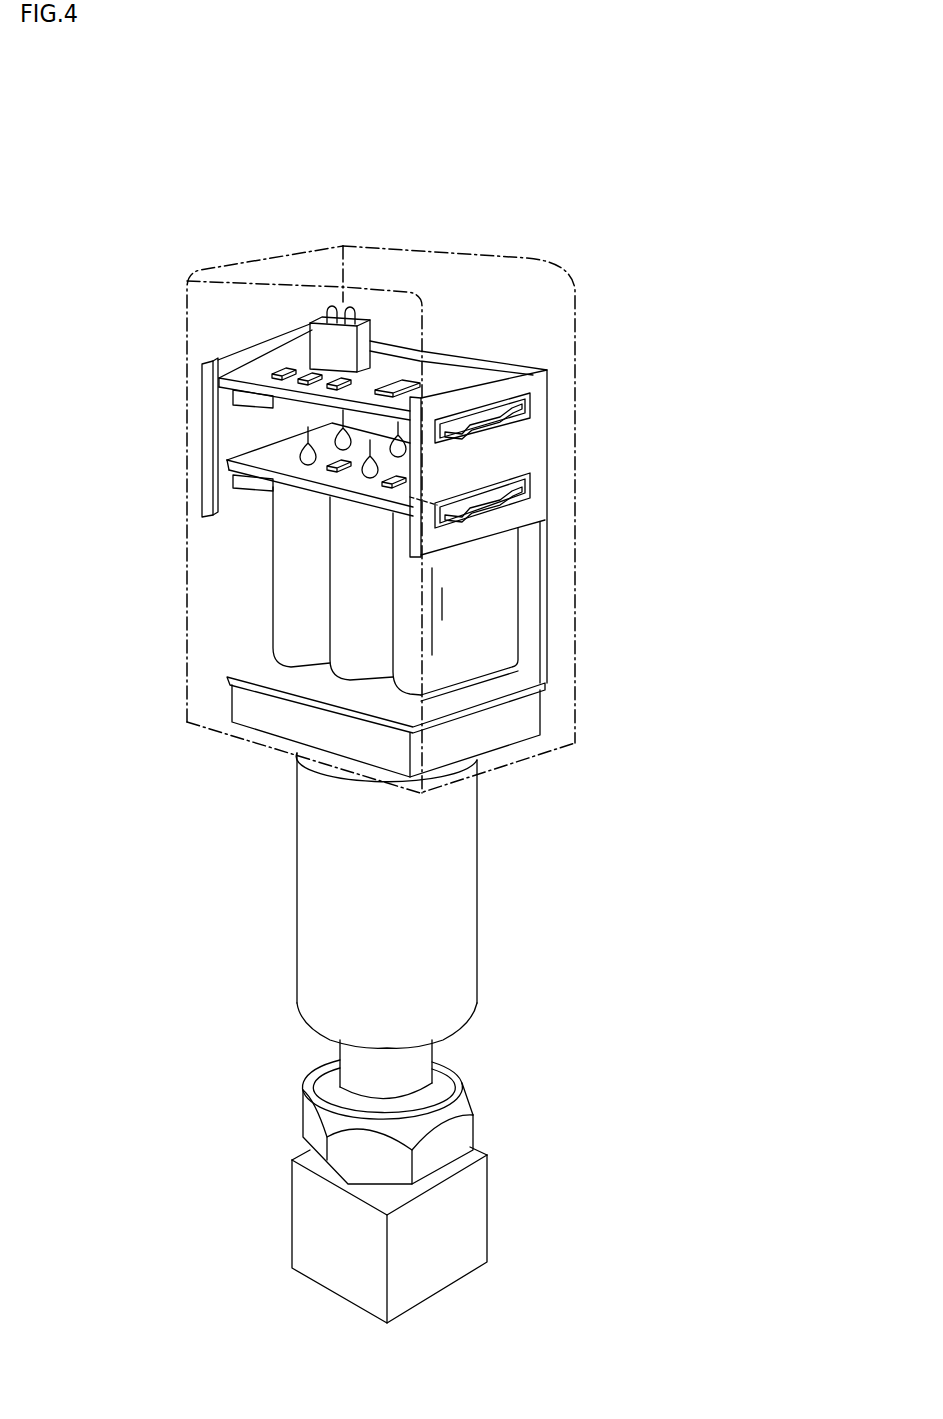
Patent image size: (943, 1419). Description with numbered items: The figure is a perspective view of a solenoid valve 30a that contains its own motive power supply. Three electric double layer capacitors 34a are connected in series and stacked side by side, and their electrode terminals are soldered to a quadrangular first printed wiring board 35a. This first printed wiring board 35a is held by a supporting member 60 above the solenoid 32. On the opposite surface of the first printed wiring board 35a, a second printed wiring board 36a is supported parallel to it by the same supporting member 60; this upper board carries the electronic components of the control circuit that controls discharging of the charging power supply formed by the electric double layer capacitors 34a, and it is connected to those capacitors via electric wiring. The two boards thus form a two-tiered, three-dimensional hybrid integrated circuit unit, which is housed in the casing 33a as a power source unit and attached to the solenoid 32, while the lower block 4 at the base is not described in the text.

The solenoid valve 30a is at (560, 200).
The casing 33a is at (577, 332).
The supporting member 60 is at (535, 440).
The second printed wiring board 36a is at (250, 376).
The first printed wiring board 35a is at (268, 460).
The electric double layer capacitors 34a is at (403, 628).
The solenoid 32 is at (490, 893).
The mounting fitting 4 is at (467, 1103).